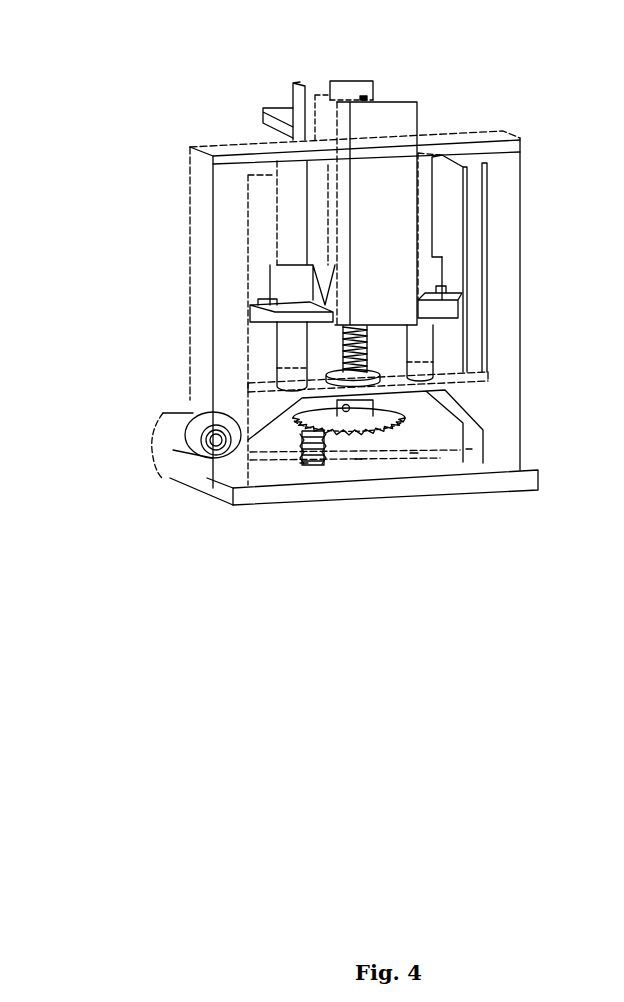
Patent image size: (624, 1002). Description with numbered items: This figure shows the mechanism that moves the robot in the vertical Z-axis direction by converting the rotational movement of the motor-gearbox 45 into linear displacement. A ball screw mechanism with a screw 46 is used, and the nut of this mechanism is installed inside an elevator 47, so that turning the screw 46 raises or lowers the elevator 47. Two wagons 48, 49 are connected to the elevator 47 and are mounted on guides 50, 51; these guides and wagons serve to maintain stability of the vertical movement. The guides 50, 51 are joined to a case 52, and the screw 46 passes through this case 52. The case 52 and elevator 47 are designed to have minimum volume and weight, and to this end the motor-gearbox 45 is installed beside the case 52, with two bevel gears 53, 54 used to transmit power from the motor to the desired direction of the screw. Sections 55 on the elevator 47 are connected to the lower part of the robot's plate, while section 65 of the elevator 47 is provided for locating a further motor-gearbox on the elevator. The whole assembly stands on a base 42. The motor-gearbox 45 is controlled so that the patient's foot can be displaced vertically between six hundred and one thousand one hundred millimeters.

The base 42 is at (468, 472).
The motor-gearbox 45 is at (160, 422).
The screw 46 is at (338, 360).
The elevator 47 is at (384, 158).
The wagon 48 is at (285, 287).
The wagon 49 is at (440, 273).
The guide 50 is at (285, 221).
The guide 51 is at (437, 198).
The case 52 is at (518, 158).
The bevel gear 53 is at (315, 466).
The bevel gear 54 is at (384, 440).
The sections 55 is at (362, 79).
The section 65 is at (259, 106).